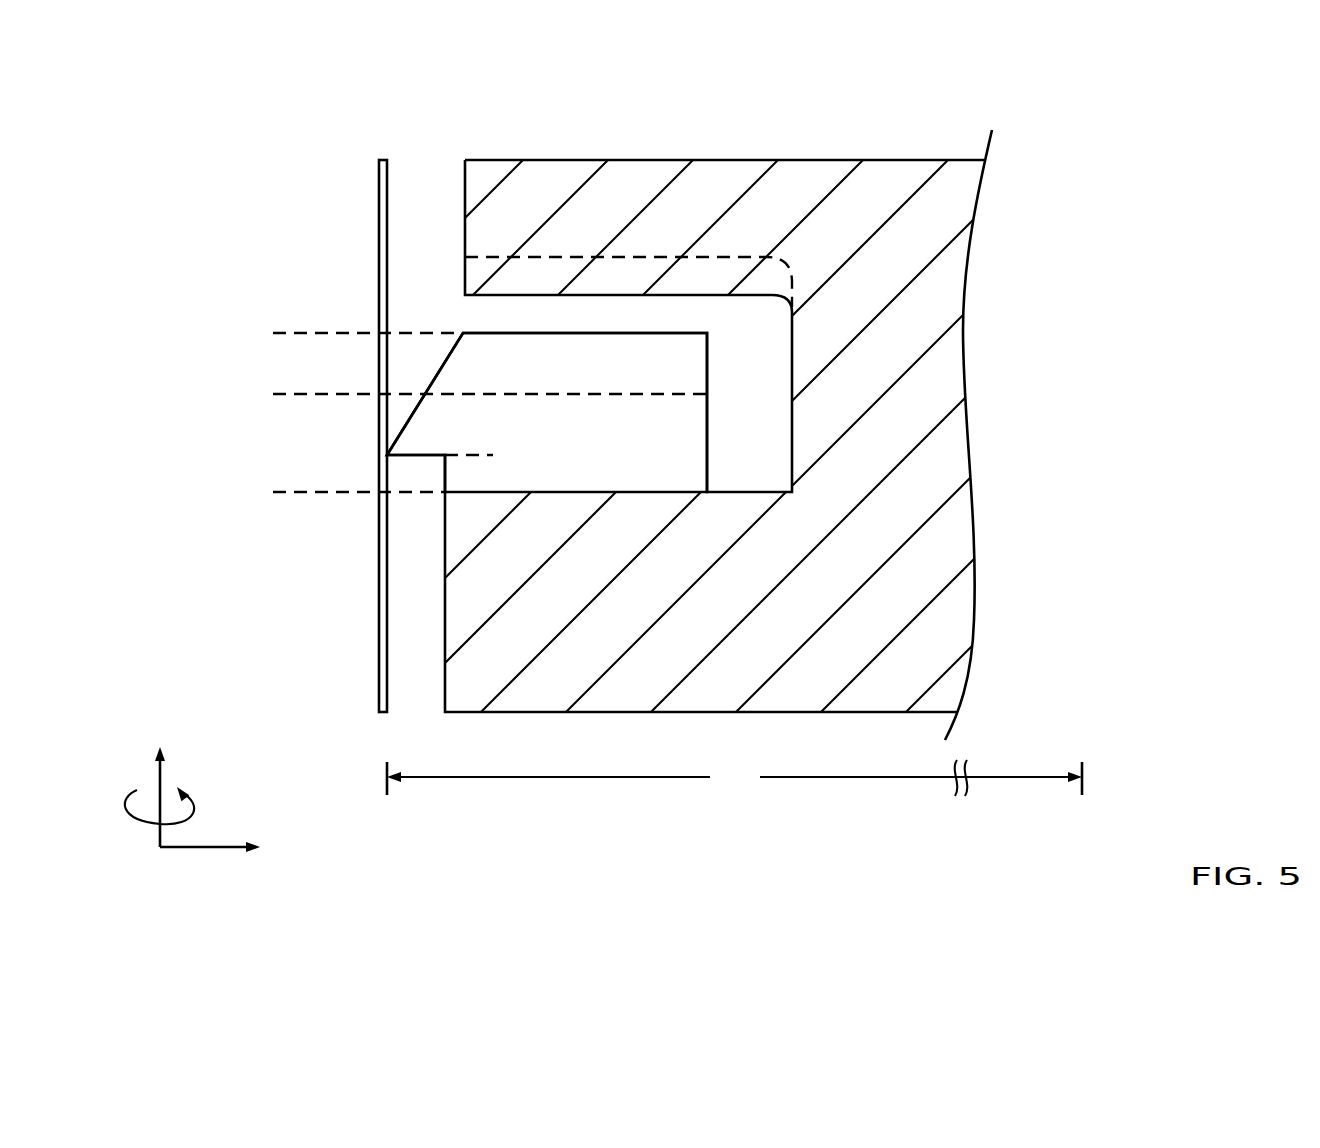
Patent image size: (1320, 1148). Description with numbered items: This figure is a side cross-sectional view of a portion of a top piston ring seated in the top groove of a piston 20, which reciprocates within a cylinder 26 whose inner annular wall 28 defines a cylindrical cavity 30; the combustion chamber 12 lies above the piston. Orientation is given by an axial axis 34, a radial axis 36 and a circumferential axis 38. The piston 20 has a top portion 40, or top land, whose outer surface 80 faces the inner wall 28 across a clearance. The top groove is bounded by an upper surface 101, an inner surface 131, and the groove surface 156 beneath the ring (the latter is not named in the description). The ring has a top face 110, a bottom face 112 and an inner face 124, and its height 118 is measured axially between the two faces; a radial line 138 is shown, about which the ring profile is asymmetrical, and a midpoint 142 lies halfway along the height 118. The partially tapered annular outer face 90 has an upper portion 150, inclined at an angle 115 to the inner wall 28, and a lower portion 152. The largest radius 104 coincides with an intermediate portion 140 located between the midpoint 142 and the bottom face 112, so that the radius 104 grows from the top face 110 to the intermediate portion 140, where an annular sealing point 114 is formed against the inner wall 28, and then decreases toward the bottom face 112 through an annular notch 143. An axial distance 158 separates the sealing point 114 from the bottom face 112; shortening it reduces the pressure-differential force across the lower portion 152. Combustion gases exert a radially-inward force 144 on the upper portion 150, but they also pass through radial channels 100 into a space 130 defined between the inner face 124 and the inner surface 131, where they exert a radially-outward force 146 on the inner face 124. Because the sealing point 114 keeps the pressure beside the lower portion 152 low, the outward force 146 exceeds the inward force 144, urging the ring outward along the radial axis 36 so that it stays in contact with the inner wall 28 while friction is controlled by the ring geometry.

The combustion chamber 12 is at (622, 120).
The piston 20 is at (1044, 171).
The cylinder 26 is at (379, 223).
The inner annular wall 28 is at (388, 205).
The cylindrical cavity 30 is at (415, 256).
The axial axis 34 is at (158, 778).
The radial axis 36 is at (205, 848).
The circumferential axis 38 is at (190, 815).
The top portion 40 is at (722, 160).
The outer surface 80 is at (465, 167).
The partially tapered annular outer face 90 is at (405, 424).
The radial channels 100 is at (788, 278).
The upper surface 101 is at (545, 296).
The largest radius 104 is at (734, 778).
The top face 110 is at (526, 333).
The bottom face 112 is at (578, 492).
The annular sealing point 114 is at (391, 450).
The angle 115 is at (397, 438).
The height 118 is at (291, 343).
The inner face 124 is at (707, 464).
The space 130 is at (735, 394).
The inner surface 131 is at (790, 348).
The radial line 138 is at (600, 394).
The intermediate portion 140 is at (364, 452).
The midpoint 142 is at (410, 395).
The annular notch 143 is at (427, 468).
The radially-inward force 144 is at (430, 368).
The radially-outward force 146 is at (762, 350).
The upper portion 150 is at (447, 360).
The lower portion 152 is at (446, 476).
The top surface of lower portion 156 is at (650, 493).
The axial distance 158 is at (487, 420).